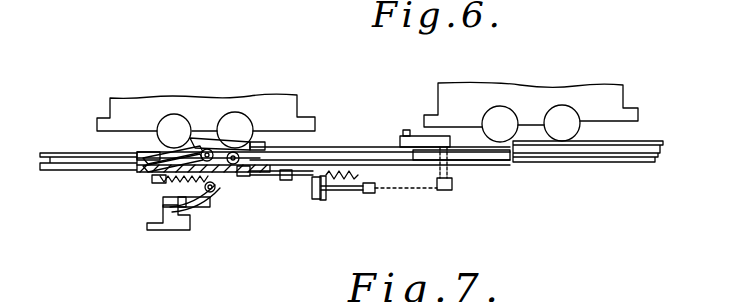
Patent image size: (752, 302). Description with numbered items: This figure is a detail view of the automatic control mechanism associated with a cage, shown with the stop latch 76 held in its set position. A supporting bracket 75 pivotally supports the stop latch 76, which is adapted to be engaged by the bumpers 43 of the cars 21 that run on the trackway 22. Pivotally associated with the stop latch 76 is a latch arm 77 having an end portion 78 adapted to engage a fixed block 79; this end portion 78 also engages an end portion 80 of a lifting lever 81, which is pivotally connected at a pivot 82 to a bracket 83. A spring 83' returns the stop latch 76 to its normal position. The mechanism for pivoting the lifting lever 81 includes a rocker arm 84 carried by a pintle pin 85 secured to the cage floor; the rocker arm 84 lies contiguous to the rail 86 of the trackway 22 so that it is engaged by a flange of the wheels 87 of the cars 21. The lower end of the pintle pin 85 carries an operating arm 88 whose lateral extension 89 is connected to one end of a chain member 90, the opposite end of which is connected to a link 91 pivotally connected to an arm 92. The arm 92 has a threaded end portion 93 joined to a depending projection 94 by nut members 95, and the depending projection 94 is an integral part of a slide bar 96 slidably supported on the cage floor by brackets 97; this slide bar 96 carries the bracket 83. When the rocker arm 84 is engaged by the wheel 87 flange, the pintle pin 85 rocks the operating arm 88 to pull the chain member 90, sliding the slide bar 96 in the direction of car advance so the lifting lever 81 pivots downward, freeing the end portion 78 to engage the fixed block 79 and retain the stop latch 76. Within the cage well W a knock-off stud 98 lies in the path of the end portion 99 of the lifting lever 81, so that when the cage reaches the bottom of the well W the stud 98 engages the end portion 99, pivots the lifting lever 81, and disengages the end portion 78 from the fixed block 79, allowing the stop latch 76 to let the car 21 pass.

The car 21 is at (610, 86).
The trackway 22 is at (610, 156).
The bumper 43 is at (97, 120).
The supporting bracket 75 is at (254, 144).
The stop latch 76 is at (203, 134).
The latch arm 77 is at (192, 134).
The end portion 78 is at (152, 150).
The fixed block 79 is at (160, 185).
The end portion 80 is at (157, 182).
The lifting lever 81 is at (187, 188).
The pivot 82 is at (211, 198).
The bracket 83 is at (238, 208).
The spring 83' is at (210, 232).
The rocker arm 84 is at (406, 130).
The pintle pin 85 is at (445, 172).
The rail 86 is at (497, 165).
The wheel 87 is at (500, 118).
The operating arm 88 is at (451, 193).
The lateral extension 89 is at (428, 190).
The chain member 90 is at (403, 190).
The link 91 is at (367, 194).
The arm 92 is at (337, 192).
The threaded end portion 93 is at (315, 182).
The depending projection 94 is at (287, 181).
The nut member 95 is at (312, 200).
The slide bar 96 is at (248, 178).
The bracket 97 is at (266, 178).
The knock-off stud 98 is at (158, 217).
The end portion 99 is at (176, 291).
The cage well W is at (156, 218).